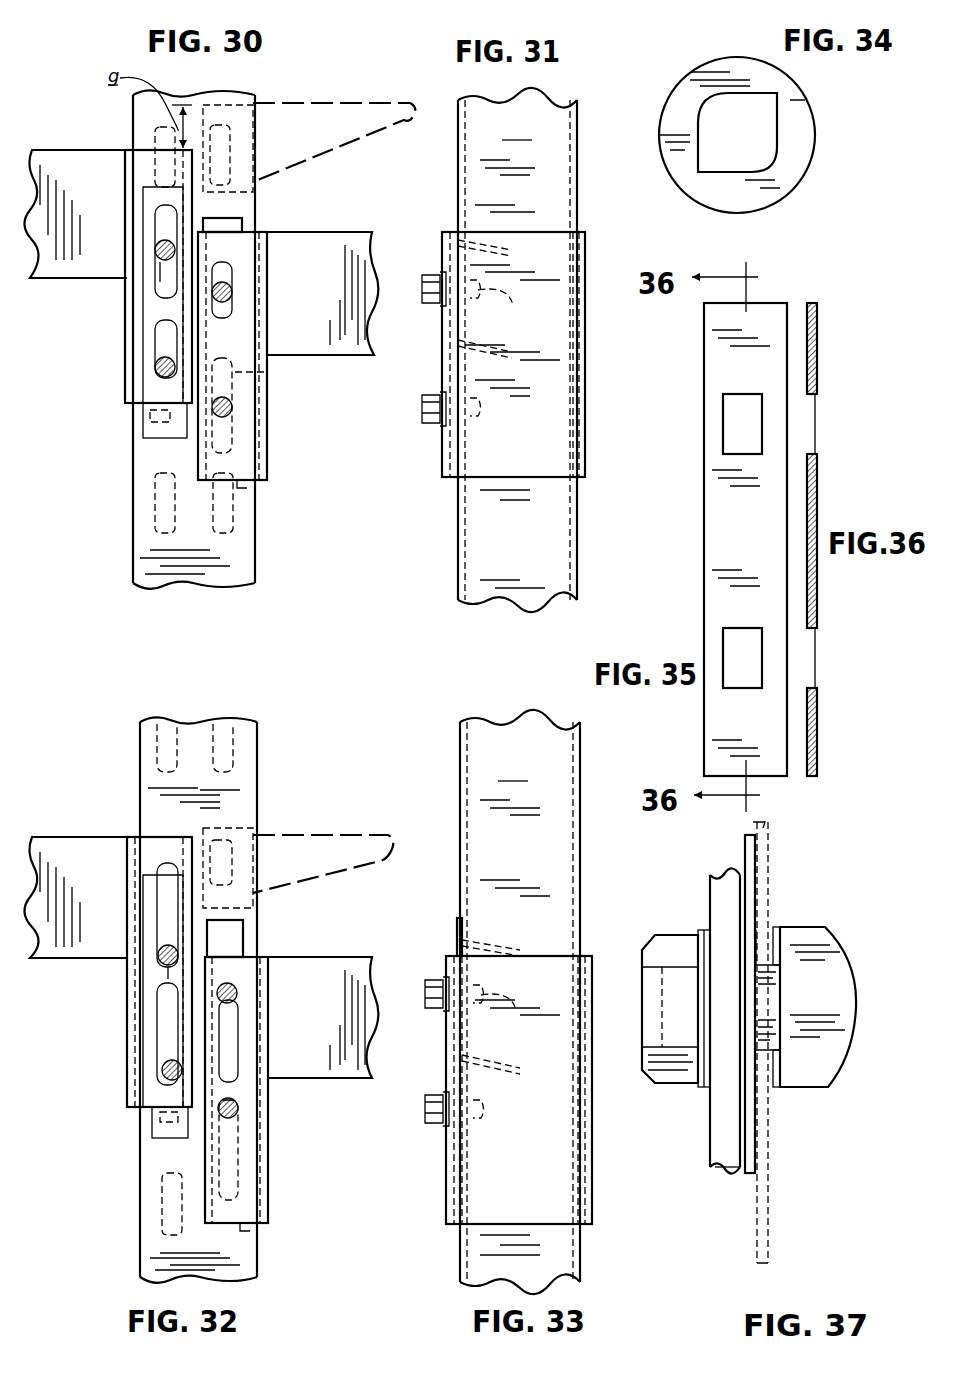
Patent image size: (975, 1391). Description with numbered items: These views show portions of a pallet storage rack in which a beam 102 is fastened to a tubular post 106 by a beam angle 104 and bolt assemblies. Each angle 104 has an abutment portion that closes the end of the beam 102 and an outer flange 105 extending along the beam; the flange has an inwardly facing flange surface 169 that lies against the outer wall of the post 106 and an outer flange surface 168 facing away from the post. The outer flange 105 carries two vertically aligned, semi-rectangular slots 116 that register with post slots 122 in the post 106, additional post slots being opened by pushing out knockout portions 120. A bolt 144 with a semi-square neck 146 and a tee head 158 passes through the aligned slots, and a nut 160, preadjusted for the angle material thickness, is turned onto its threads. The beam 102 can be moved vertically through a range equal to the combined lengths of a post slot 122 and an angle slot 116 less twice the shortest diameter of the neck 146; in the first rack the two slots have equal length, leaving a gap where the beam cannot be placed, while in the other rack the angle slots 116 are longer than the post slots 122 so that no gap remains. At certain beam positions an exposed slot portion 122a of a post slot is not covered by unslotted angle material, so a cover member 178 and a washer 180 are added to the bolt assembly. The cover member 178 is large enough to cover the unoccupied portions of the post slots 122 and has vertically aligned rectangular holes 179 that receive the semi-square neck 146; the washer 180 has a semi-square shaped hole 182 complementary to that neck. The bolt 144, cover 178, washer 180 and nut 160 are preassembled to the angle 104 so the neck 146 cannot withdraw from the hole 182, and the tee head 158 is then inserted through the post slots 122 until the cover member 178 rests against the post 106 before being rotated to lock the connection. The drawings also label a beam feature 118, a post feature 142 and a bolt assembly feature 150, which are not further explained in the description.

In FIG. 30, the beam 102 is at (90, 146).
In FIG. 32, the beam 102 is at (80, 833).
In FIG. 30, the angle 104 is at (268, 462).
In FIG. 31, the angle 104 is at (442, 475).
In FIG. 32, the angle 104 is at (270, 1190).
In FIG. 33, the angle 104 is at (446, 1205).
In FIG. 37, the angle 104 is at (710, 868).
In FIG. 30, the outer flange 105 is at (248, 488).
In FIG. 32, the outer flange 105 is at (250, 1230).
In FIG. 37, the outer flange 105 is at (728, 1175).
In FIG. 31, the tubular post 106 is at (455, 172).
In FIG. 33, the tubular post 106 is at (460, 770).
In FIG. 37, the tubular post 106 is at (760, 1200).
In FIG. 30, the angle slot 116 is at (240, 440).
In FIG. 32, the angle slot 116 is at (150, 918).
In FIG. 30, the beam bottom flange 118 is at (320, 355).
In FIG. 32, the beam bottom flange 118 is at (318, 1078).
In FIG. 30, the knockout 120 is at (230, 135).
In FIG. 31, the knockout 120 is at (495, 352).
In FIG. 32, the knockout 120 is at (228, 828).
In FIG. 33, the knockout 120 is at (540, 1045).
In FIG. 30, the post slot 122 is at (272, 380).
In FIG. 30, the exposed slot portion 122a is at (145, 432).
In FIG. 32, the exposed slot portion 122a is at (258, 932).
In FIG. 31, the post 142 is at (519, 130).
In FIG. 33, the post 142 is at (515, 771).
In FIG. 30, the bolt 144 is at (240, 167).
In FIG. 31, the bolt 144 is at (478, 418).
In FIG. 32, the bolt 144 is at (240, 862).
In FIG. 33, the bolt 144 is at (483, 1122).
In FIG. 37, the bolt 144 is at (855, 967).
In FIG. 30, the semi-square neck 146 is at (158, 282).
In FIG. 32, the semi-square neck 146 is at (165, 972).
In FIG. 37, the semi-square neck 146 is at (768, 955).
In FIG. 37, the collar 150 is at (777, 935).
In FIG. 31, the tee head 158 is at (505, 303).
In FIG. 33, the tee head 158 is at (507, 1008).
In FIG. 37, the tee head 158 is at (805, 925).
In FIG. 31, the nut 160 is at (427, 422).
In FIG. 33, the nut 160 is at (427, 1120).
In FIG. 37, the nut 160 is at (683, 935).
In FIG. 37, the outer flange surface 168 is at (712, 1142).
In FIG. 37, the inwardly facing flange surface 169 is at (745, 1142).
In FIG. 30, the cover member 178 is at (225, 215).
In FIG. 35, the cover member 178 is at (704, 530).
In FIG. 36, the cover member 178 is at (818, 330).
In FIG. 32, the cover member 178 is at (230, 920).
In FIG. 33, the cover member 178 is at (458, 935).
In FIG. 37, the cover member 178 is at (756, 1160).
In FIG. 35, the rectangular hole 179 is at (723, 437).
In FIG. 36, the rectangular hole 179 is at (817, 432).
In FIG. 34, the washer 180 is at (740, 57).
In FIG. 37, the washer 180 is at (745, 1090).
In FIG. 34, the semi-square shaped hole 182 is at (785, 170).